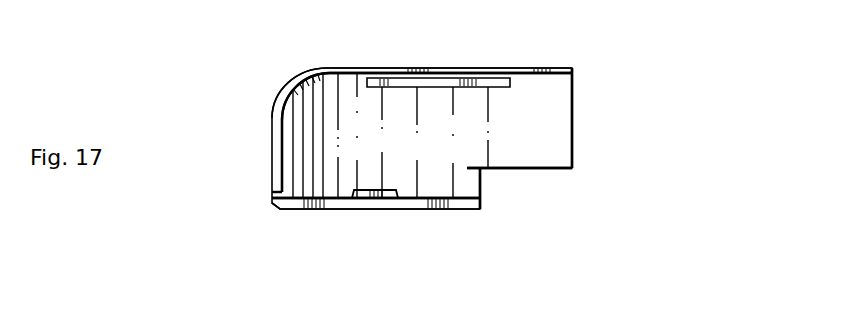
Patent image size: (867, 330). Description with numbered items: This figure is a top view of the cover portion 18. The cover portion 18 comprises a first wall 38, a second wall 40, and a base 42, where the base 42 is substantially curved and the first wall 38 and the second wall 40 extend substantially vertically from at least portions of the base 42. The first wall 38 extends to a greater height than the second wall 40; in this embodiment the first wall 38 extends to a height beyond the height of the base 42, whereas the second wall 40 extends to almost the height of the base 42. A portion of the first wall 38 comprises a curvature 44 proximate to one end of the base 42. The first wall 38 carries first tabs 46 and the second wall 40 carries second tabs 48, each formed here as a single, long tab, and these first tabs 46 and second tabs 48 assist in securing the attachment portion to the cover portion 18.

The cover portion 18 is at (672, 77).
The first wall 38 is at (542, 68).
The second wall 40 is at (330, 203).
The base 42 is at (533, 122).
The curvature 44 is at (295, 90).
The first tabs 46 is at (438, 82).
The second tabs 48 is at (377, 193).